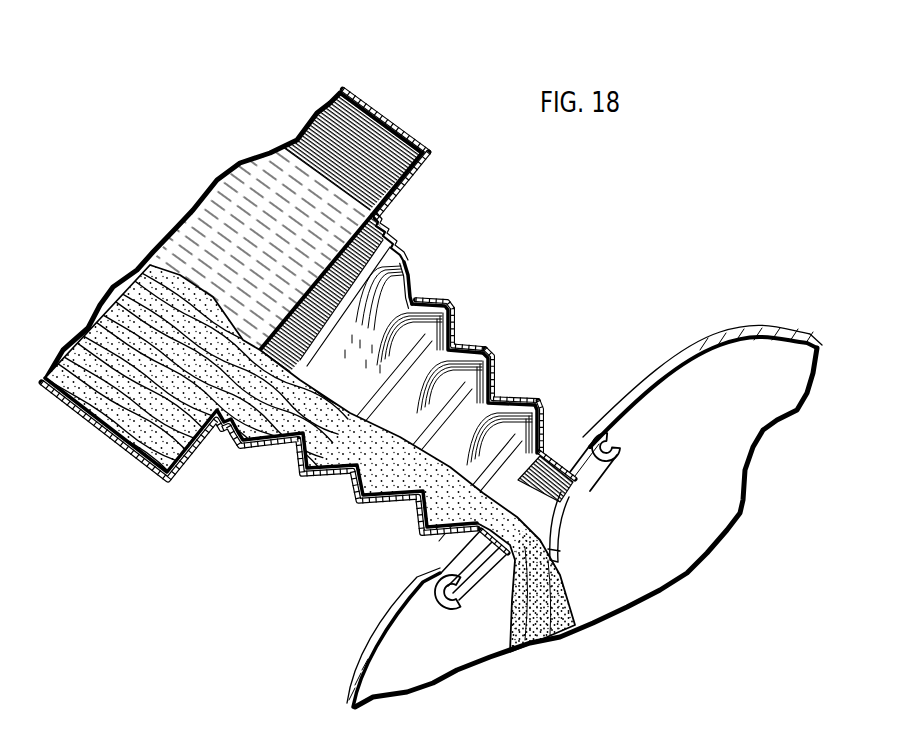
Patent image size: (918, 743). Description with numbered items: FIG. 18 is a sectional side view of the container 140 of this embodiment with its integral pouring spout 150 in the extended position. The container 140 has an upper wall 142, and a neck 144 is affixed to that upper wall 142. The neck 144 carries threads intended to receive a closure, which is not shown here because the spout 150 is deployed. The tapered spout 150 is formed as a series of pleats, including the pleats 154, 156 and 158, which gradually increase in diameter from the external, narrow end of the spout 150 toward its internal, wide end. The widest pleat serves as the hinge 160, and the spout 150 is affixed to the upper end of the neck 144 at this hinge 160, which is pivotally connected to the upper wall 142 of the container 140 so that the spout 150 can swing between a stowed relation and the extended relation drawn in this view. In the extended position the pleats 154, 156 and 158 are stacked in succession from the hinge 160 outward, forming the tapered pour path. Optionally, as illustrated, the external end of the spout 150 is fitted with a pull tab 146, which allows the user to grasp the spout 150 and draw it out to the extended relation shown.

The container 140 is at (373, 120).
The upper wall 142 is at (423, 173).
The neck 144 is at (390, 223).
The hinge 160 is at (410, 253).
The pleat 158 is at (447, 307).
The pleat 156 is at (485, 388).
The pouring spout 150 is at (465, 398).
The pleat 154 is at (527, 420).
The pull tab 146 is at (560, 523).